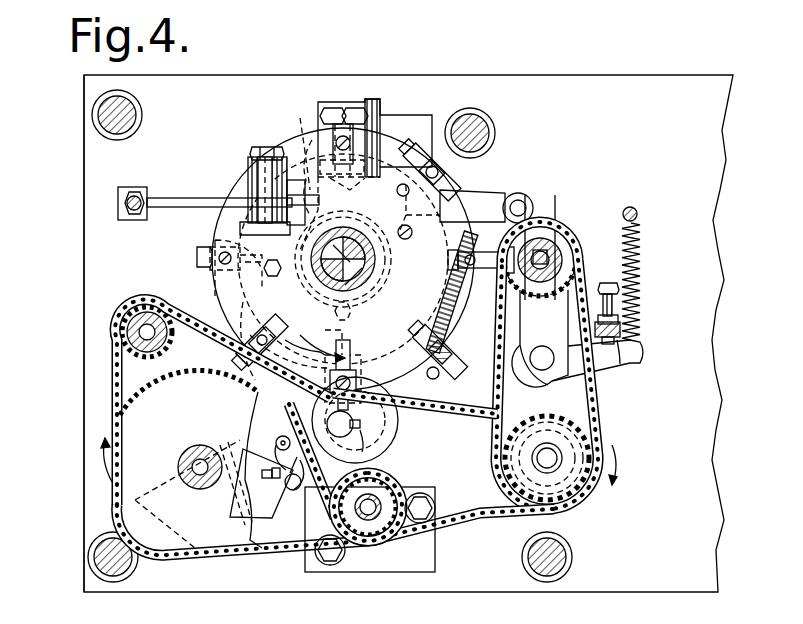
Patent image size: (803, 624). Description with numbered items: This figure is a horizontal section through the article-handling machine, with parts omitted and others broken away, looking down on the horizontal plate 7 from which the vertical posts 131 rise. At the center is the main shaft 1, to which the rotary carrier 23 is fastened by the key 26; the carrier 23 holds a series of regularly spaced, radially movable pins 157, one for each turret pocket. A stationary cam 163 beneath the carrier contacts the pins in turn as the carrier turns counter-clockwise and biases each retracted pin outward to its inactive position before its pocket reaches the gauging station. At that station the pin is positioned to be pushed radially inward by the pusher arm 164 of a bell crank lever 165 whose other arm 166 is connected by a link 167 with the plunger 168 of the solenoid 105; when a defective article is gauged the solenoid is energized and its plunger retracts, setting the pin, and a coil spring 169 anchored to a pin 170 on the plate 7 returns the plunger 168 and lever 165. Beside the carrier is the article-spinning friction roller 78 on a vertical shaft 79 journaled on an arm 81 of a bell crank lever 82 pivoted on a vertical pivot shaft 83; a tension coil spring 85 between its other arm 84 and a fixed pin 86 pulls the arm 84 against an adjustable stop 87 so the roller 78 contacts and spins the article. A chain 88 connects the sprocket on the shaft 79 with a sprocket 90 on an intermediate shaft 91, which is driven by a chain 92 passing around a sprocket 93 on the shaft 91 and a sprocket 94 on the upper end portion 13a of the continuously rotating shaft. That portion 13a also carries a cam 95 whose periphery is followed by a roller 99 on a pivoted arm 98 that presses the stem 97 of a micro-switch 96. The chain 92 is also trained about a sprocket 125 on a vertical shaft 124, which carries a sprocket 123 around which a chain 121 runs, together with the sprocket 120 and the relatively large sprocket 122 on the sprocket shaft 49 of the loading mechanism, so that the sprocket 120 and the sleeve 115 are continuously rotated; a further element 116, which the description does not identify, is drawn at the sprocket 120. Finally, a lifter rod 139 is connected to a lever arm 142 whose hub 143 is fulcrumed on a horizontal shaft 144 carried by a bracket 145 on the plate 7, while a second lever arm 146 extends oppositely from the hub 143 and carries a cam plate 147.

The main shaft 1 is at (352, 278).
The horizontal plate 7 is at (84, 312).
The upper end portion of continuously rotating shaft 13a is at (392, 450).
The rotary carrier 23 is at (450, 338).
The key 26 is at (370, 256).
The sprocket shaft 49 is at (200, 455).
The article spinning friction roller 78 is at (562, 228).
The vertical shaft 79 is at (565, 260).
The arm 81 is at (558, 330).
The bell crank lever 82 is at (536, 379).
The vertical pivot shaft 83 is at (554, 358).
The arm 84 is at (598, 362).
The tension coil spring 85 is at (640, 275).
The pin 86 is at (638, 214).
The adjustable stop 87 is at (632, 365).
The chain 88 is at (596, 406).
The sprocket 90 is at (563, 408).
The intermediate shaft 91 is at (545, 450).
The chain 92 is at (292, 395).
The sprocket 93 is at (500, 462).
The sprocket 94 is at (380, 426).
The cam 95 is at (395, 440).
The micro-switch 96 is at (266, 500).
The projecting stem 97 is at (268, 470).
The pivoted arm 98 is at (270, 433).
The roller 99 is at (283, 436).
The solenoid 105 is at (400, 113).
The sleeve 115 is at (160, 348).
The sprocket 116 is at (155, 315).
The sprocket 120 is at (222, 402).
The chain 121 is at (197, 330).
The relatively large sprocket 122 is at (170, 440).
The sprocket 123 is at (370, 540).
The vertical shaft 124 is at (340, 512).
The sprocket 125 is at (400, 490).
The vertical posts 131 is at (142, 113).
The lifter rod 139 is at (142, 188).
The lever arm 142 is at (202, 200).
The hub 143 is at (248, 170).
The horizontal shaft 144 is at (267, 147).
The bracket 145 is at (250, 222).
The second lever arm 146 is at (322, 213).
The cam plate 147 is at (306, 172).
The radial pins 157 is at (478, 285).
The stationary cam 163 is at (345, 322).
The pusher arm 164 is at (490, 248).
The bell crank lever 165 is at (524, 200).
The arm 166 is at (480, 198).
The link 167 is at (404, 198).
The plunger 168 is at (354, 198).
The coil spring 169 is at (442, 298).
The pin 170 is at (440, 374).